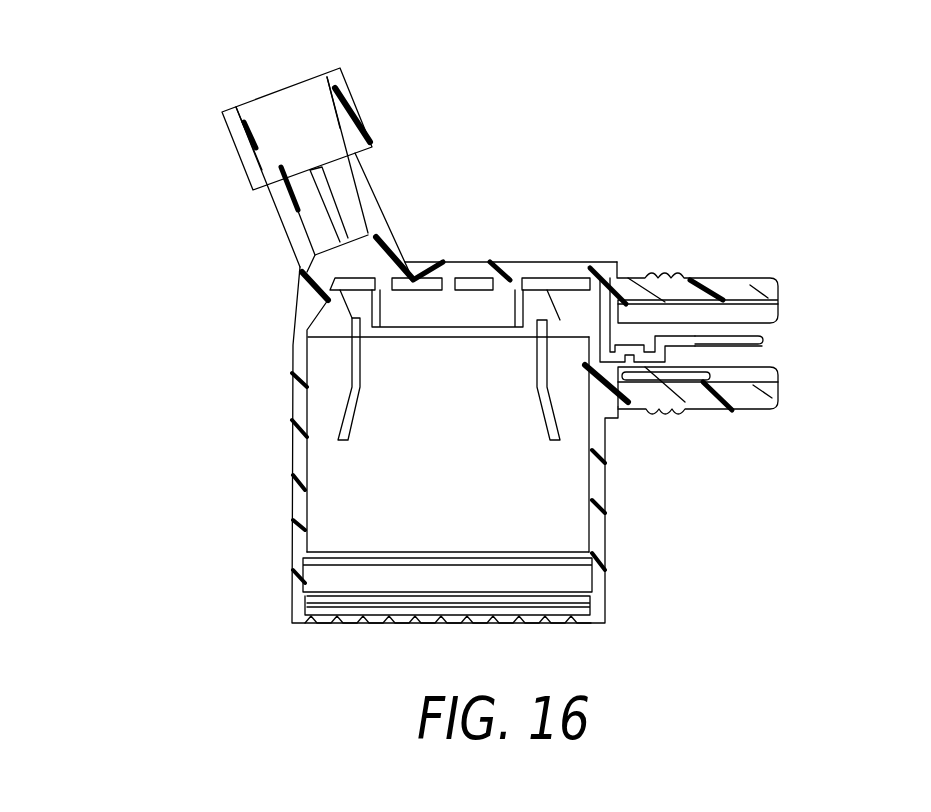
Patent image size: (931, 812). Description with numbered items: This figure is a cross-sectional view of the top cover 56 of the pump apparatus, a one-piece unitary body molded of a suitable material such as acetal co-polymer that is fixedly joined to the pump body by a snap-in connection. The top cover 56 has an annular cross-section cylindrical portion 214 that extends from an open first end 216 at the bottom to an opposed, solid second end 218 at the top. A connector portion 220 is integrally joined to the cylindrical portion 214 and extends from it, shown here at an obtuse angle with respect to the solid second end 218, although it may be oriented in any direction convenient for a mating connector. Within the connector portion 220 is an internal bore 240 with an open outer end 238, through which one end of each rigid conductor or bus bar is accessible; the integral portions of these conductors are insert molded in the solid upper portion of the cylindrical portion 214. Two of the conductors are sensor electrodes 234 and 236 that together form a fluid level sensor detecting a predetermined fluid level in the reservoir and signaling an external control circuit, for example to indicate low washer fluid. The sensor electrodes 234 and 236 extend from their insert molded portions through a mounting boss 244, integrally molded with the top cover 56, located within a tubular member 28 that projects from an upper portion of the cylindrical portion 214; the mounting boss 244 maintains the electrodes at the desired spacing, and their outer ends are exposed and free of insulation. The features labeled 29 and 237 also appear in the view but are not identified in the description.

The tubular member 28 is at (693, 278).
The lower flange 29 is at (683, 408).
The top cover 56 is at (257, 371).
The cylindrical portion 214 is at (292, 536).
The open first end 216 is at (598, 624).
The solid second end 218 is at (500, 262).
The connector portion 220 is at (443, 152).
The sensor electrode 234 is at (310, 197).
The sensor electrode 236 is at (746, 336).
The ledge 237 is at (765, 343).
The open outer end 238 is at (250, 147).
The internal bore 240 is at (240, 155).
The mounting boss 244 is at (643, 302).